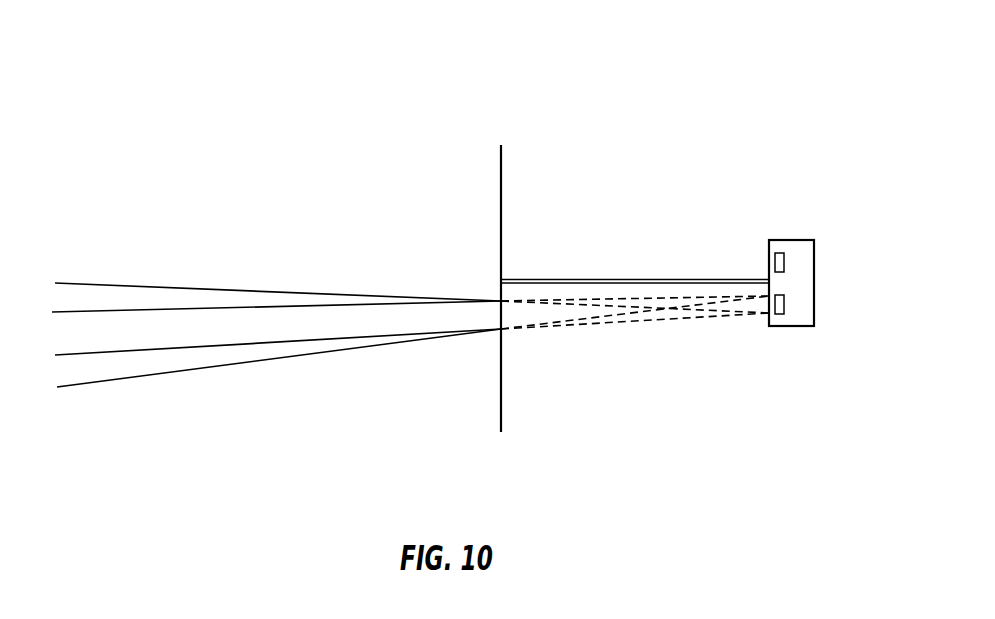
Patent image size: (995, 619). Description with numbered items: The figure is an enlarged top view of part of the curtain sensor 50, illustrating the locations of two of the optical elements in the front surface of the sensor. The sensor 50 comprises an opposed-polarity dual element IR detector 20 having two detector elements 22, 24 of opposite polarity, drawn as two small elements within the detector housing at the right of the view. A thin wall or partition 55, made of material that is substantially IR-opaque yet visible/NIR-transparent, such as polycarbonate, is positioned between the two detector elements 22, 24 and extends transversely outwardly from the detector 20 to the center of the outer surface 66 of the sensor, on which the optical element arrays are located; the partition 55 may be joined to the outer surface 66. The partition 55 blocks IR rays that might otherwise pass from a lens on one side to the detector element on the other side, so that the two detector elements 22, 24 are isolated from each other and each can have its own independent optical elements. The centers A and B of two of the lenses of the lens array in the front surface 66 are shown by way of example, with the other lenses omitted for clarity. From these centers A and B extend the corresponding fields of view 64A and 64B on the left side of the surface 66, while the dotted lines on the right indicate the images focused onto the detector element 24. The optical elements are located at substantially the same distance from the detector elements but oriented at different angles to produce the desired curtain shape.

The curtain sensor 50 is at (677, 67).
The outer surface 66 is at (501, 170).
The field of view 64A is at (98, 283).
The field of view 64B is at (82, 354).
The partition 55 is at (633, 280).
The dual element IR detector 20 is at (814, 293).
The first detector element 22 is at (785, 262).
The second detector element 24 is at (785, 307).
The center of optical element A is at (501, 301).
The center of optical element B is at (501, 329).